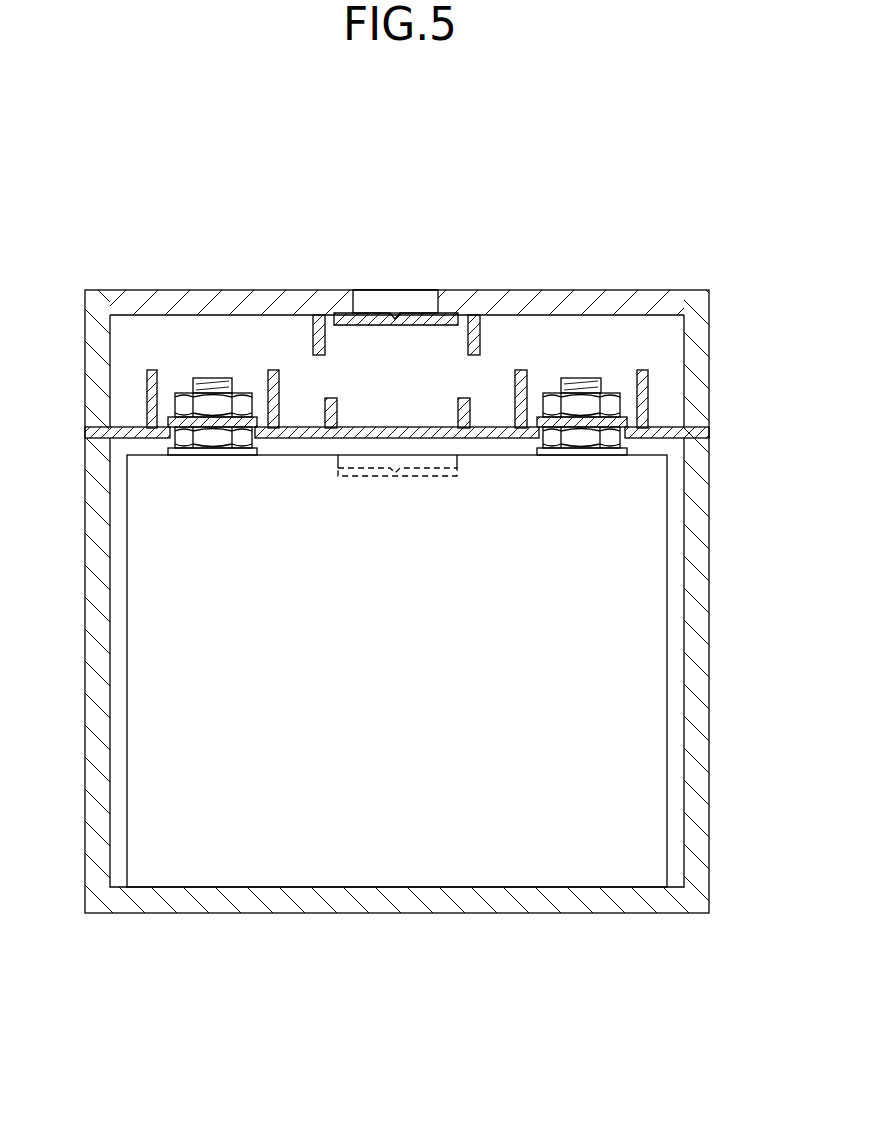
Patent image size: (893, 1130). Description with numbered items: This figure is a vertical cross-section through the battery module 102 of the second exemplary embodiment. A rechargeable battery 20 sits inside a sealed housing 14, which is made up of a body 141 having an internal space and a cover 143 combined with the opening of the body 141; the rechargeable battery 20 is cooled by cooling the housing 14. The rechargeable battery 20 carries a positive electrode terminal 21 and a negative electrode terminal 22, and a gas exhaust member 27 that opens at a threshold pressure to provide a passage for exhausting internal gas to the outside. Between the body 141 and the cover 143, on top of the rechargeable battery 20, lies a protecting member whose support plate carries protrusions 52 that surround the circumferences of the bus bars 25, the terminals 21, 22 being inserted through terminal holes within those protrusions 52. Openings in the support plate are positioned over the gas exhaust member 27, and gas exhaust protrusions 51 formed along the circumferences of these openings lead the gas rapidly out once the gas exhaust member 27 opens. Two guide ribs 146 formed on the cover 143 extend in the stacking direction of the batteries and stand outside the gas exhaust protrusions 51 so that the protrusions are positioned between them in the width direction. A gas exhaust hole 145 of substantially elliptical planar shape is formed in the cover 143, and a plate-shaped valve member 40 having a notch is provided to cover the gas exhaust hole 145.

The battery module 102 is at (374, 184).
The housing 14 is at (714, 532).
The body 141 is at (697, 587).
The cover 143 is at (180, 303).
The gas exhaust hole 145 is at (418, 288).
The guide ribs 146 is at (480, 337).
The valve member 40 is at (377, 313).
The protrusions 52 is at (147, 390).
The gas exhaust protrusions 51 is at (325, 408).
The rechargeable battery 20 is at (127, 722).
The positive electrode terminal 21 is at (215, 378).
The negative electrode terminal 22 is at (592, 377).
The bus bars 25 is at (627, 418).
The gas exhaust member 27 is at (414, 468).